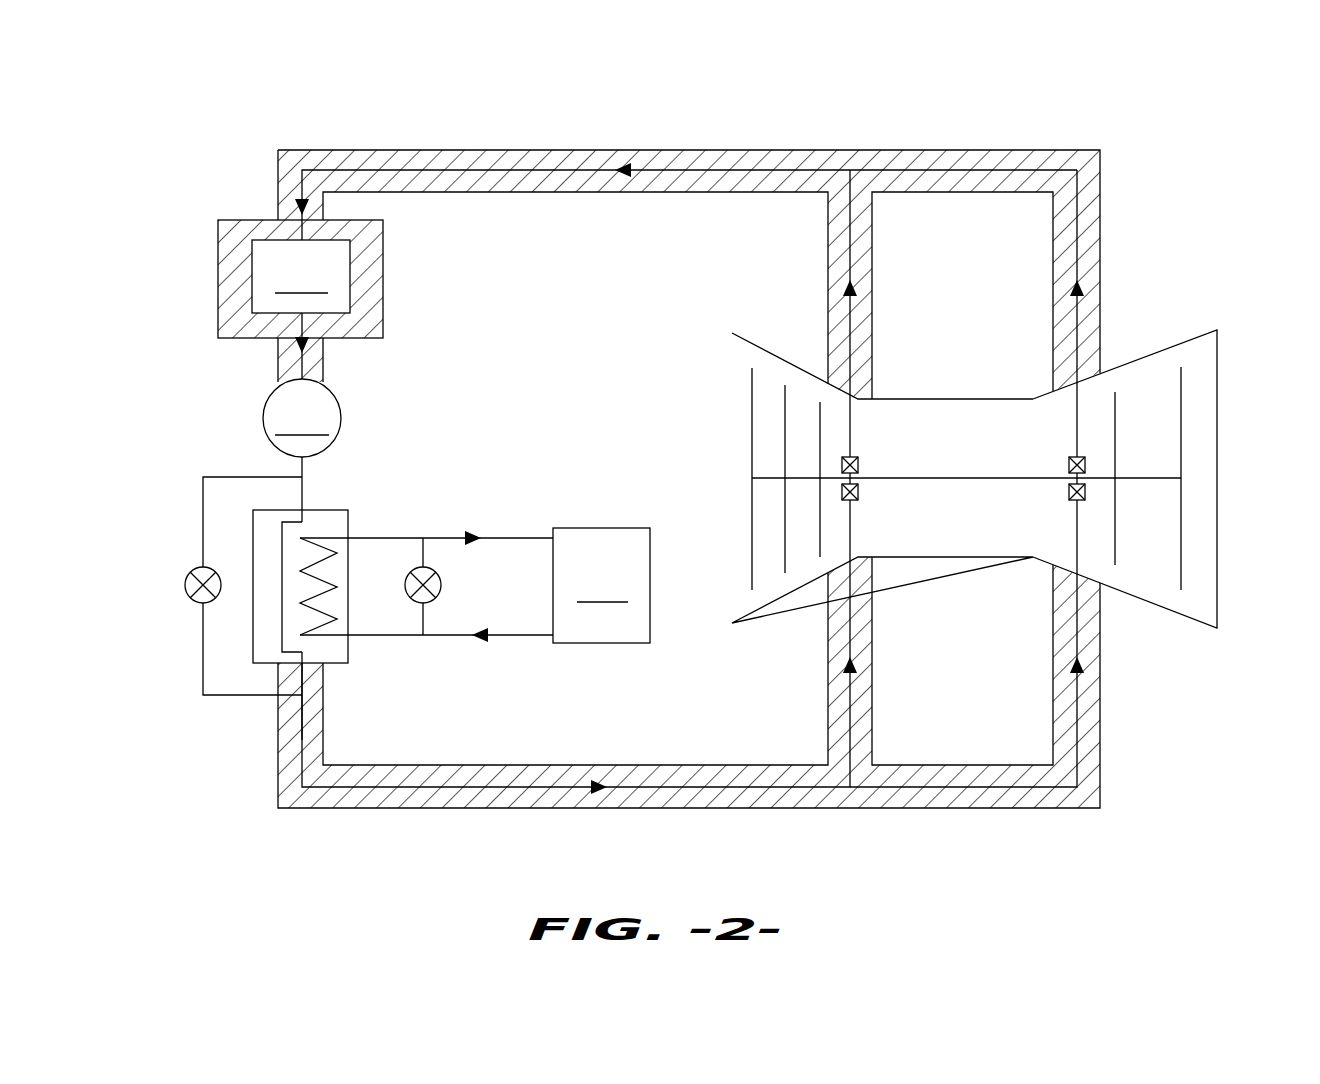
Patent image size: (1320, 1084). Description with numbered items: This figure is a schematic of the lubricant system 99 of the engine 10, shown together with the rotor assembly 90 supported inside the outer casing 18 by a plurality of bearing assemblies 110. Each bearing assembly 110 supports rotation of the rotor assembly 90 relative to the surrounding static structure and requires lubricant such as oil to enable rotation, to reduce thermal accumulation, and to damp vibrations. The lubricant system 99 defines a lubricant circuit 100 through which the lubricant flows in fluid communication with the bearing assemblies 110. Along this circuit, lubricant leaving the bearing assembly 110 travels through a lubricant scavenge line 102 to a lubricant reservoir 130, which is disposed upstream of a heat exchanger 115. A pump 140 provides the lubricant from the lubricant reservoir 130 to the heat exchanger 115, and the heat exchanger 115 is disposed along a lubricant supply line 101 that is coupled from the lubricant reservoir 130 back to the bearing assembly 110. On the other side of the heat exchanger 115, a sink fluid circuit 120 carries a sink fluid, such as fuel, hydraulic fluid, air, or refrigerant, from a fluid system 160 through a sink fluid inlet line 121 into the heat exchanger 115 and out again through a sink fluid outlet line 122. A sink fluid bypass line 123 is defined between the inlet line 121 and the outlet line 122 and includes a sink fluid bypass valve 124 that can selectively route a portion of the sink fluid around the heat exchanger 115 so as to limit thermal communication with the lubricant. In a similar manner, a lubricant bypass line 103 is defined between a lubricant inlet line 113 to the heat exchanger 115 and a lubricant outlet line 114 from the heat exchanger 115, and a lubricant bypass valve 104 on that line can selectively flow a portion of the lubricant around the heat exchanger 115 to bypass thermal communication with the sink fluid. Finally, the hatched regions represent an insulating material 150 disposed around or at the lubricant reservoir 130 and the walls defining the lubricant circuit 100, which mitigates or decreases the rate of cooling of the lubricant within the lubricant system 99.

The engine 10 is at (1195, 138).
The outer casing 18 is at (1152, 350).
The rotor assembly 90 is at (1155, 460).
The lubricant system 99 is at (322, 103).
The lubricant circuit 100 is at (423, 168).
The lubricant supply line 101 is at (737, 790).
The lubricant scavenge line 102 is at (297, 193).
The lubricant bypass line 103 is at (200, 663).
The lubricant bypass valve 104 is at (182, 587).
The bearing assembly 110 is at (1067, 462).
The lubricant inlet line 113 is at (307, 462).
The lubricant outlet line 114 is at (300, 682).
The heat exchanger 115 is at (350, 522).
The sink fluid circuit 120 is at (515, 520).
The sink fluid inlet line 121 is at (452, 637).
The sink fluid outlet line 122 is at (432, 538).
The sink fluid bypass line 123 is at (420, 615).
The sink fluid bypass valve 124 is at (440, 587).
The lubricant reservoir 130 is at (300, 279).
The pump 140 is at (302, 418).
The insulating material 150 is at (565, 148).
The fluid system 160 is at (601, 585).